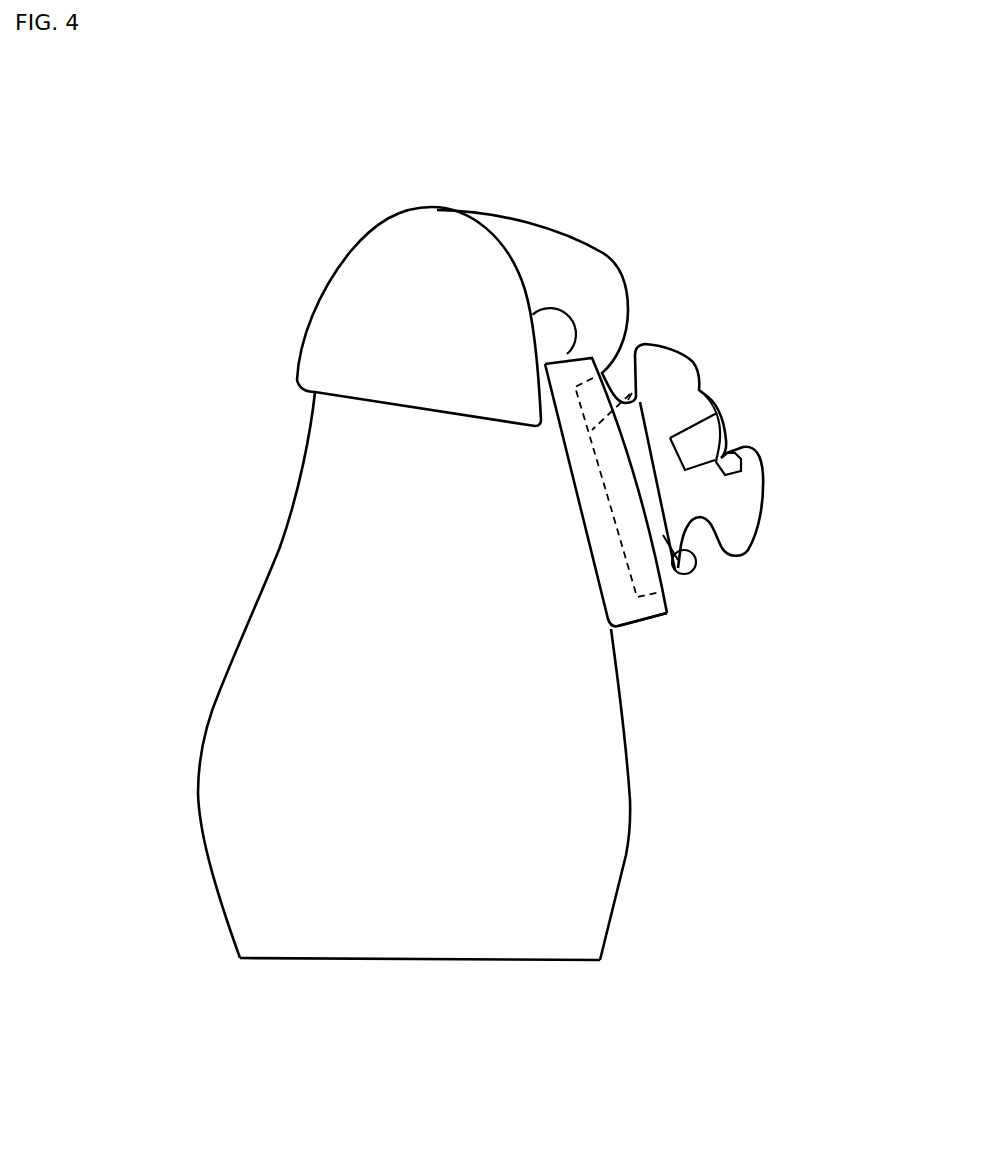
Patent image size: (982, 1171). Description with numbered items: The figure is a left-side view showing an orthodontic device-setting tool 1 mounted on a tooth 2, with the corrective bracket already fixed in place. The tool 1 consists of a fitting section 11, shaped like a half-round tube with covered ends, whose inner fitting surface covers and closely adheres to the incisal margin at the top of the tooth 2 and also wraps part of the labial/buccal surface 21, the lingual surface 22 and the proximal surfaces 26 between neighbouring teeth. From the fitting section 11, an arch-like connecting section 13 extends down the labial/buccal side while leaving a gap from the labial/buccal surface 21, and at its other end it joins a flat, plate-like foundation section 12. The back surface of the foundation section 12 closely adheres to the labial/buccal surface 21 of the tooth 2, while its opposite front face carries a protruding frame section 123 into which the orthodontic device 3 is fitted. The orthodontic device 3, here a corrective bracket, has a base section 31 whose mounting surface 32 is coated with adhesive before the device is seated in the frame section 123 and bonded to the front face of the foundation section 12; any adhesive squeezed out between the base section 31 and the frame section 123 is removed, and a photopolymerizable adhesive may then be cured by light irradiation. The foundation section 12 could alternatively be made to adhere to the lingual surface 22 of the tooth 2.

The orthodontic device-setting tool 1 is at (281, 274).
The fitting section 11 is at (371, 237).
The connecting section 13 is at (562, 272).
The foundation section 12 is at (628, 623).
The frame section 123 is at (673, 603).
The orthodontic device 3 is at (752, 357).
The base section 31 is at (692, 572).
The mounting surface 32 is at (632, 393).
The tooth 2 is at (172, 851).
The labial/buccal surface 21 is at (630, 775).
The lingual surface 22 is at (257, 600).
The proximal surfaces 26 is at (418, 697).